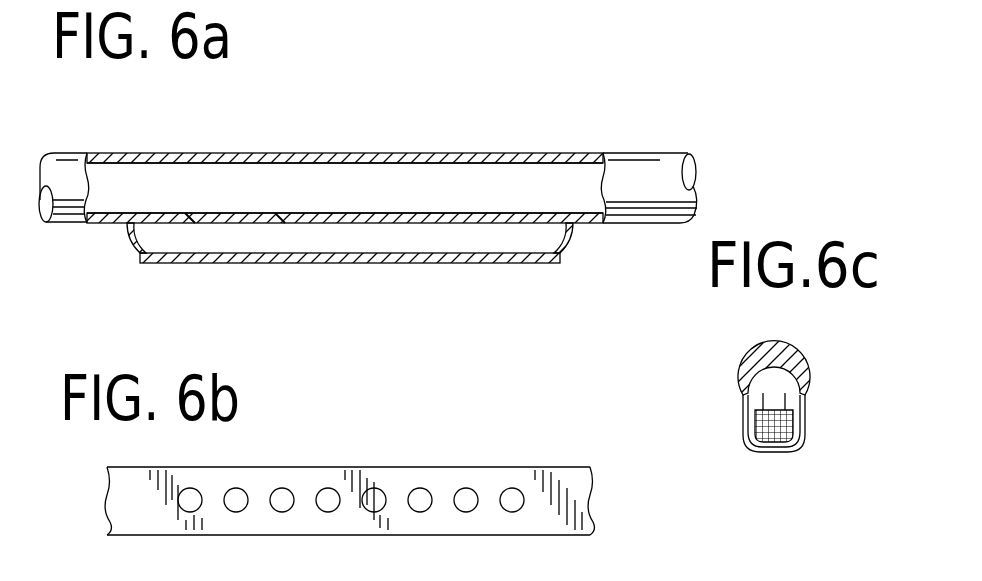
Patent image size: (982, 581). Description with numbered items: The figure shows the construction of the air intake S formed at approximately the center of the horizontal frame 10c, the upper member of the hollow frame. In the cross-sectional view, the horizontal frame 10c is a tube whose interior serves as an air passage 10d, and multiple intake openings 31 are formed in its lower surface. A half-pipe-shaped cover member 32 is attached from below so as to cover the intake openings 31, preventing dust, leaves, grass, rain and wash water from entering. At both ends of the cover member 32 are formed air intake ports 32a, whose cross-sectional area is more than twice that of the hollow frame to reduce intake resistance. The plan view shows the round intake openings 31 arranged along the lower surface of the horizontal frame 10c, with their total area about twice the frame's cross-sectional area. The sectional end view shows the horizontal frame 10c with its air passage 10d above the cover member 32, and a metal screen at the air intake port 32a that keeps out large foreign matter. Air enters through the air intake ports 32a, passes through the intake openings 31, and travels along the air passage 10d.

In FIG. 6a, the horizontal frame 10c is at (415, 155).
In FIG. 6b, the horizontal frame 10c is at (478, 466).
In FIG. 6c, the horizontal frame 10c is at (780, 350).
In FIG. 6a, the air passages 10d is at (125, 190).
In FIG. 6c, the air passages 10d is at (780, 373).
In FIG. 6a, the intake openings 31 is at (190, 217).
In FIG. 6b, the intake openings 31 is at (513, 503).
In FIG. 6a, the cover member 32 is at (226, 264).
In FIG. 6c, the cover member 32 is at (805, 410).
In FIG. 6a, the air intake ports 32a is at (133, 229).
In FIG. 6c, the air intake ports 32a is at (757, 438).
In FIG. 6a, the air intake S is at (490, 274).